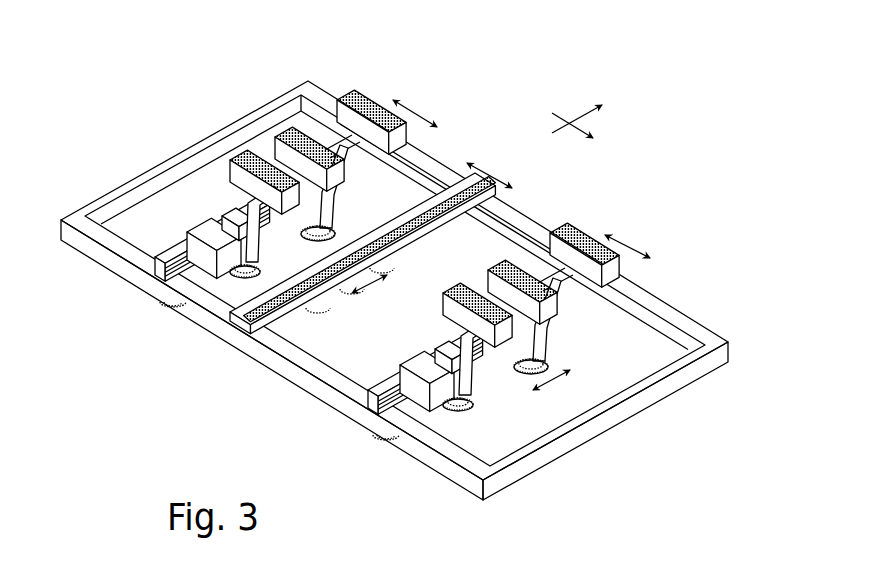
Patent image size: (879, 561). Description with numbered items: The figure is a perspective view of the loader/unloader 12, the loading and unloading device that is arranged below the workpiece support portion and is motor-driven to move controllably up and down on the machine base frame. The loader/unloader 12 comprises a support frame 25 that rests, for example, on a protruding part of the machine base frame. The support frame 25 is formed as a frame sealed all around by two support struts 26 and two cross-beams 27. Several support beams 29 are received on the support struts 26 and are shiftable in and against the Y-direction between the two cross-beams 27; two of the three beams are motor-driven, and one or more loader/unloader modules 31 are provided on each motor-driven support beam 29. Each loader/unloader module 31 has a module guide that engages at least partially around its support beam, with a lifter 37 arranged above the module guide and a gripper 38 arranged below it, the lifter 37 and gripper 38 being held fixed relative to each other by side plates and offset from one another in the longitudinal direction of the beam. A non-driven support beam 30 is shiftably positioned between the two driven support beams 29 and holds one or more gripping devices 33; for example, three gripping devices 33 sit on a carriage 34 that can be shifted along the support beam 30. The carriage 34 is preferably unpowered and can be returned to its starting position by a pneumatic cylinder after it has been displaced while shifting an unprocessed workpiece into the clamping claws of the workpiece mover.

The loader/unloader 12 is at (390, 283).
The support frame 25 is at (471, 189).
The support struts 26 is at (390, 290).
The cross-beams 27 is at (167, 157).
The support beams 29 is at (157, 270).
The non-driven support beam 30 is at (337, 301).
The loader/unloader module 31 is at (437, 433).
The gripping device 33 is at (313, 303).
The carriage 34 is at (295, 310).
The lifter 37 is at (354, 93).
The gripper 38 is at (386, 445).